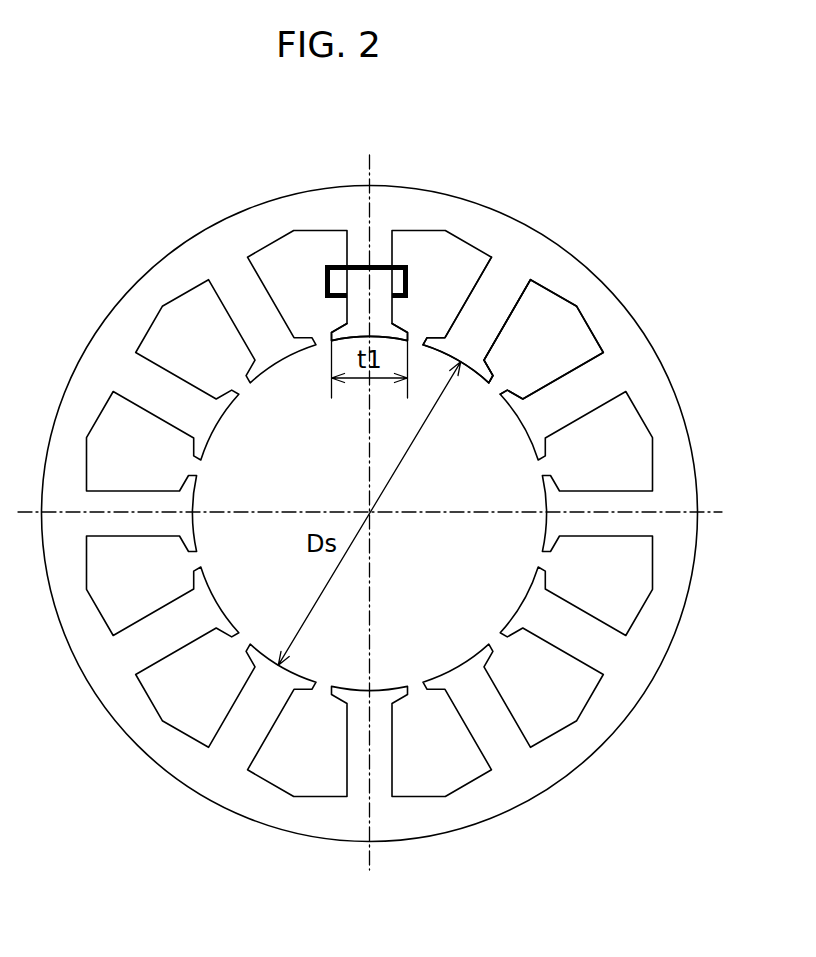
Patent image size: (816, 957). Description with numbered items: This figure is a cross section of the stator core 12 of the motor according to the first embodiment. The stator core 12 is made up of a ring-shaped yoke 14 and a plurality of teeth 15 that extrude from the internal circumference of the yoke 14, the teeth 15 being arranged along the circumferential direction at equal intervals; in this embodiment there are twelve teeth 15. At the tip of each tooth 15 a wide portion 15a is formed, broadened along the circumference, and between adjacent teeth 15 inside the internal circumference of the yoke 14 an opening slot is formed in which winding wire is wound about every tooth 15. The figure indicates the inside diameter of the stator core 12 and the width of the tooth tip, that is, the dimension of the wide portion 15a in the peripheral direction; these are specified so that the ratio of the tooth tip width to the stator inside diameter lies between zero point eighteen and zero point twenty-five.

The stator core 12 is at (647, 340).
The yoke 14 is at (565, 285).
The tooth 15 is at (485, 307).
The wide portion 15a is at (407, 337).